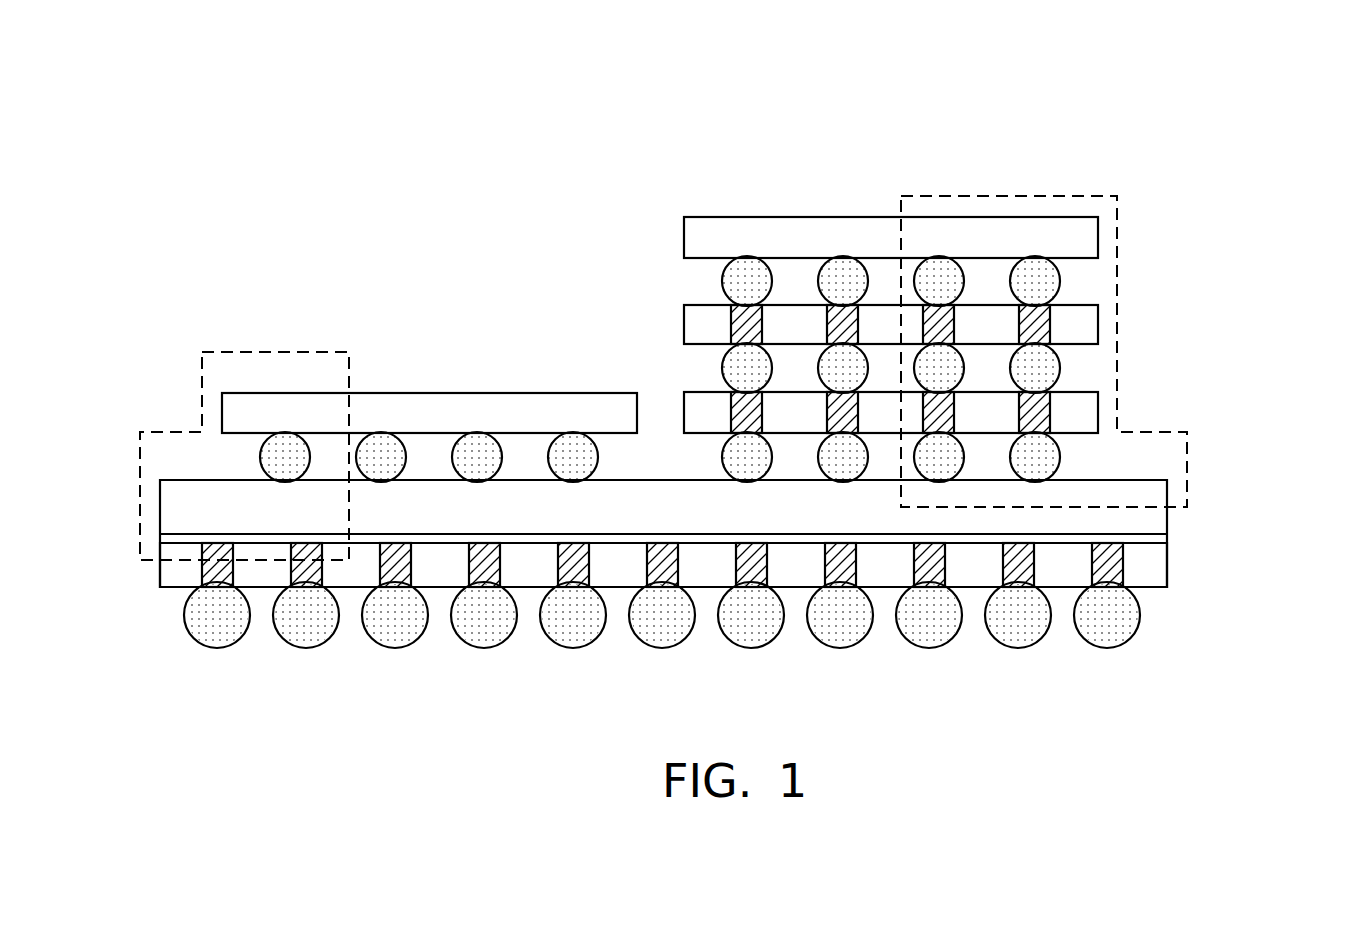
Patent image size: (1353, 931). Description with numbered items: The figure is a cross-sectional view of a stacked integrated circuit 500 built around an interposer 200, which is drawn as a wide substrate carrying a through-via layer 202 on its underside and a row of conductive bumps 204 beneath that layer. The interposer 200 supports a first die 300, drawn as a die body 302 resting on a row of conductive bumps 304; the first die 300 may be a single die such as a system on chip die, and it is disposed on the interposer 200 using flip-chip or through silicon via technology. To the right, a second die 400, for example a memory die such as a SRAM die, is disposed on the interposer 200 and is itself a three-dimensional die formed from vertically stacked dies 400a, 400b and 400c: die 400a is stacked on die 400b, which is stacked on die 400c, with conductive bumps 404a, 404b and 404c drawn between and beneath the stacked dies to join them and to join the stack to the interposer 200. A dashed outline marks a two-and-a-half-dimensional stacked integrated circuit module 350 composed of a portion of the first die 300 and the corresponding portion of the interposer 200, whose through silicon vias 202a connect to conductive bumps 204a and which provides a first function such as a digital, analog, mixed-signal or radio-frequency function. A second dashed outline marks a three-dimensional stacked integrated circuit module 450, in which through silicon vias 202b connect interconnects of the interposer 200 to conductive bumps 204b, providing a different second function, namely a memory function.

The stacked integrated circuit 500 is at (168, 129).
The interposer 200 is at (686, 517).
The conductive layer with vias 202 is at (1130, 563).
The through silicon vias 202a is at (1281, 592).
The through silicon vias 202b is at (774, 568).
The solder balls 204 is at (1145, 620).
The conductive bumps 204a is at (1281, 668).
The conductive bumps 204b is at (766, 626).
The first die 300 is at (511, 320).
The first semiconductor die 302 is at (453, 426).
The conductive bumps 304 is at (573, 457).
The 2.5D stacked integrated circuit module 350 is at (276, 352).
The second die 400 is at (781, 165).
The die 400a is at (670, 206).
The die 400b is at (670, 292).
The die 400c is at (1104, 382).
The upper conductive bumps 404a is at (1035, 281).
The middle conductive bumps / through vias 404b is at (840, 353).
The lower conductive bumps 404c is at (1035, 457).
The 3D stacked integrated circuit module 450 is at (1008, 196).